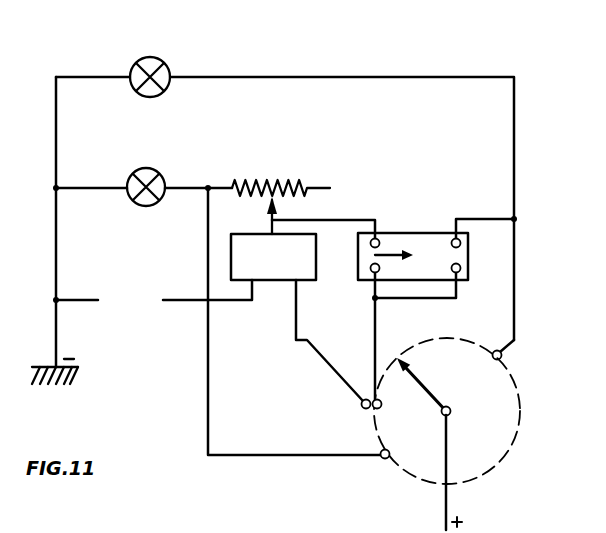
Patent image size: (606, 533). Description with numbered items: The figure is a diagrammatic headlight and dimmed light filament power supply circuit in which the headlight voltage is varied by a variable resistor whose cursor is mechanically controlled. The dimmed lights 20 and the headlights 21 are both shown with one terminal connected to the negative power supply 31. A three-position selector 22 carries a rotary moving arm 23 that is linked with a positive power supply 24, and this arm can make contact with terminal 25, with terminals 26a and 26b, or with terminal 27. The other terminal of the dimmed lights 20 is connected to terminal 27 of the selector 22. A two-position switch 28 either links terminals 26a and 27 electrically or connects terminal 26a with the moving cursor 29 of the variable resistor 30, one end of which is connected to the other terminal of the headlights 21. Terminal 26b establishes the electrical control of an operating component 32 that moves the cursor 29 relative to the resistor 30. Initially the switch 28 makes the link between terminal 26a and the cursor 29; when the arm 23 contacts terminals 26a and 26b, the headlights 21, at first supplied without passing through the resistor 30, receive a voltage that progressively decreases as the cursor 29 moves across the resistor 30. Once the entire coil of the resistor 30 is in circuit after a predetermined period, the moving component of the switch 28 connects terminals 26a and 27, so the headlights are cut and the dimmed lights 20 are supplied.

The dimmed lights 20 is at (157, 58).
The headlights 21 is at (152, 169).
The three-position selector 22 is at (521, 410).
The rotary moving arm 23 is at (427, 384).
The positive power supply 24 is at (446, 512).
The terminal 25 is at (385, 459).
The terminal 26a is at (381, 404).
The terminal 26b is at (362, 407).
The terminal 27 is at (502, 355).
The two-position switch 28 is at (437, 233).
The moving cursor 29 is at (270, 226).
The variable resistor 30 is at (257, 178).
The negative power supply 31 is at (55, 332).
The operating component 32 is at (317, 272).